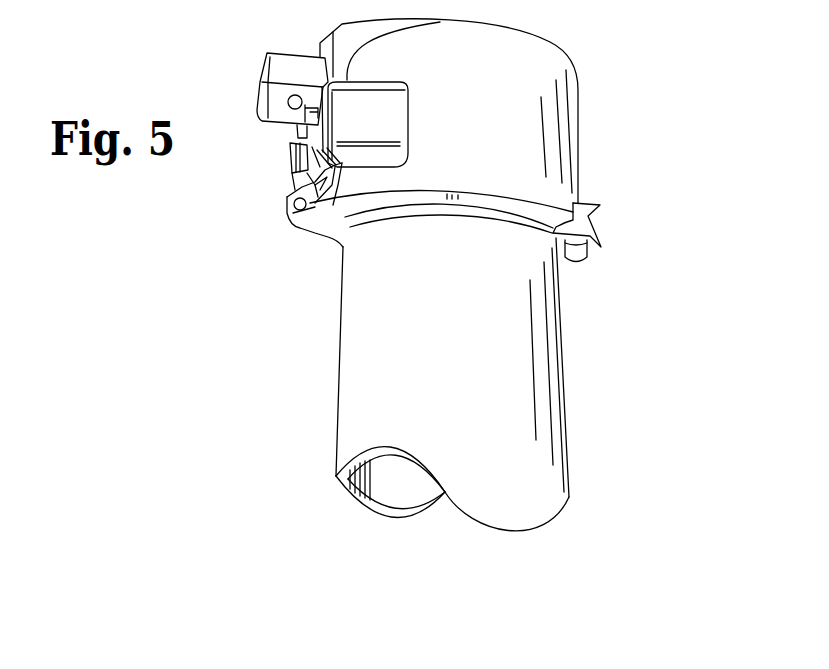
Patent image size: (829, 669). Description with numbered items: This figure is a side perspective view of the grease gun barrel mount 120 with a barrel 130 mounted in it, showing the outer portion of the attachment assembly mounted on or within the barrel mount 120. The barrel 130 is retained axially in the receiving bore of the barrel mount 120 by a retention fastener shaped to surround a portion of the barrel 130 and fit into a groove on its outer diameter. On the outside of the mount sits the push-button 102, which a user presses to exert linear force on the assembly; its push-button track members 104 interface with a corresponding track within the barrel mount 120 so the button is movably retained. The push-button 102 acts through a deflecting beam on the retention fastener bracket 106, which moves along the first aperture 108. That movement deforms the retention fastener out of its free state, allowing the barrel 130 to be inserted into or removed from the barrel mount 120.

The push-button 102 is at (370, 167).
The push-button track members 104 is at (300, 120).
The retention fastener bracket 106 is at (287, 210).
The first aperture 108 is at (332, 168).
The barrel mount 120 is at (592, 163).
The barrel 130 is at (577, 357).